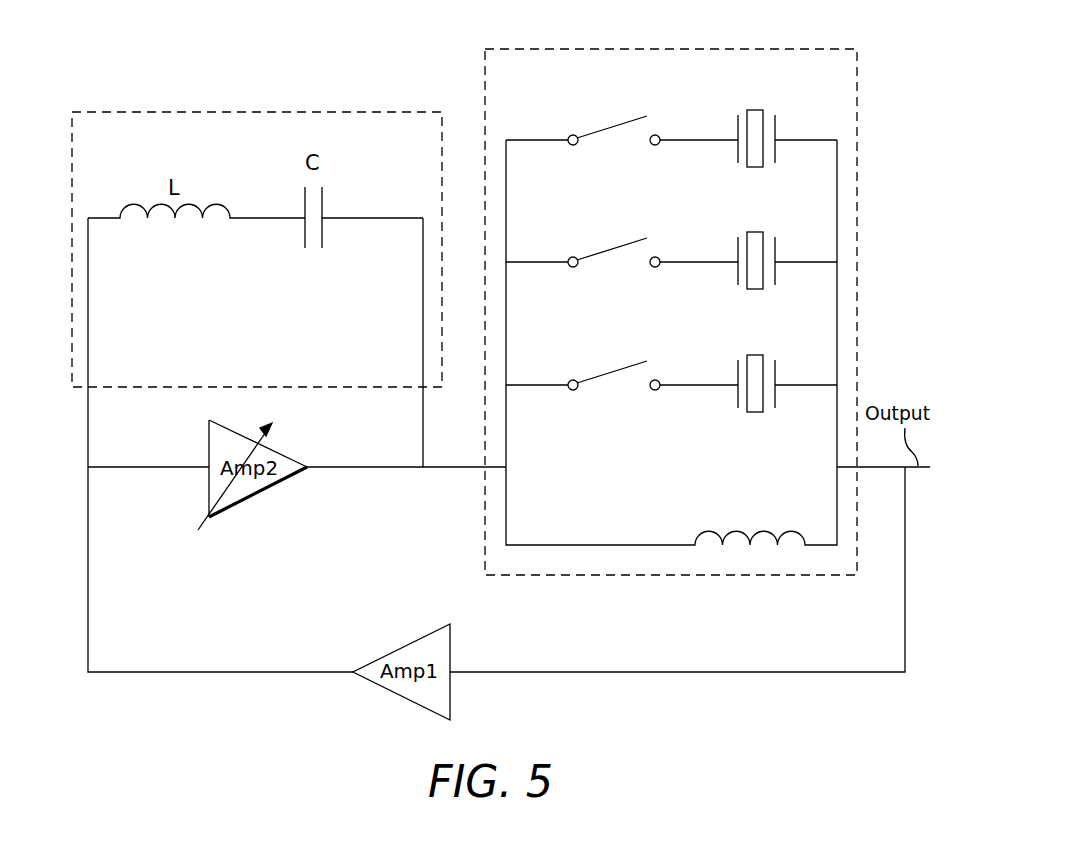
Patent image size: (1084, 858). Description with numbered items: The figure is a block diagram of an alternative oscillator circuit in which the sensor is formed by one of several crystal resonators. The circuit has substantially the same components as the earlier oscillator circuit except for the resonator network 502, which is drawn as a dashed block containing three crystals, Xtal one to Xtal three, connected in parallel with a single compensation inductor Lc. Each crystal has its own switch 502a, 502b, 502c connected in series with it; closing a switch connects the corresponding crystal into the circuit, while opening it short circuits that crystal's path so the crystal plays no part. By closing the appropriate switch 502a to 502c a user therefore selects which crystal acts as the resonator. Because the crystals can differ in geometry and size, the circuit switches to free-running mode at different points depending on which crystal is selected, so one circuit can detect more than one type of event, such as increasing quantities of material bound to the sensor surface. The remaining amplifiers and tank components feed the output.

The resonator network 502 is at (637, 292).
The switch 502a is at (613, 142).
The switch 502b is at (613, 264).
The switch 502c is at (613, 387).